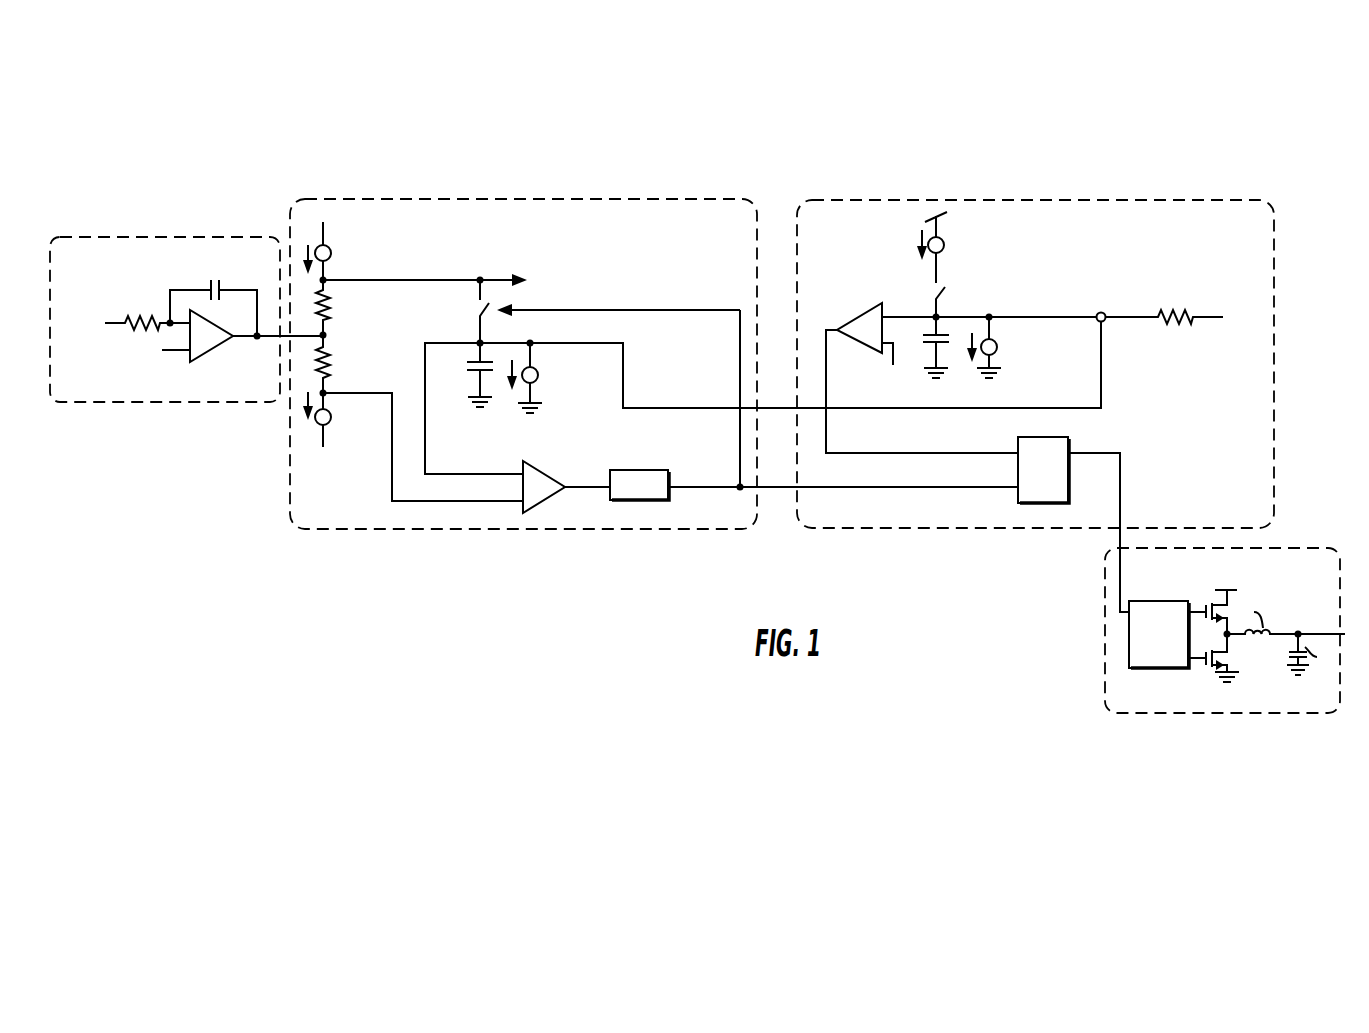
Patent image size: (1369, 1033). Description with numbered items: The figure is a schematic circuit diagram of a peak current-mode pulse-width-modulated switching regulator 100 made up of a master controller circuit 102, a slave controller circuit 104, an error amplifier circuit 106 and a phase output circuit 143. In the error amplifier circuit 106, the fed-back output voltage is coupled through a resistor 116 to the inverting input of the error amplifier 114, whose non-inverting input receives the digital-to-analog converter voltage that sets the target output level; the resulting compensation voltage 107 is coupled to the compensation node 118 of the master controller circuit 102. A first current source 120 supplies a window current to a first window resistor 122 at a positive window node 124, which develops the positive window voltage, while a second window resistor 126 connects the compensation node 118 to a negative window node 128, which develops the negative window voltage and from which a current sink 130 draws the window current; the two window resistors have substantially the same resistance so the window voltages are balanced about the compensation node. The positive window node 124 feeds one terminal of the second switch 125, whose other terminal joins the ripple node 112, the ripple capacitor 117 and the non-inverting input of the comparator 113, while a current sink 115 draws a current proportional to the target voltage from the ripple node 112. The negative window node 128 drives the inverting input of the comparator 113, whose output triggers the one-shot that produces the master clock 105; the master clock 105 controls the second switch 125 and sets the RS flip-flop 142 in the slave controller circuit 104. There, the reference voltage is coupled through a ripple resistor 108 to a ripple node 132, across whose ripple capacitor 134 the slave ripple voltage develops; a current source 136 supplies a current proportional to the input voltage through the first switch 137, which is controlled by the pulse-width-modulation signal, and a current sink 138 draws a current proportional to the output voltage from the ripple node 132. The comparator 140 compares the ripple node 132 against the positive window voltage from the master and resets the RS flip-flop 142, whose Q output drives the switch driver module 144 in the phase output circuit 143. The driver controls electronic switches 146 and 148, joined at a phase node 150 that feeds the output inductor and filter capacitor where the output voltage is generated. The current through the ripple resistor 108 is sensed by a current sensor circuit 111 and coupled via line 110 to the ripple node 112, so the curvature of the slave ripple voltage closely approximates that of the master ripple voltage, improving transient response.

The switching regulator 100 is at (749, 137).
The master controller circuit 102 is at (472, 218).
The slave controller circuit 104 is at (1078, 216).
The master clock 105 is at (713, 489).
The error amplifier circuit 106 is at (233, 259).
The compensation voltage VCOMP 107 is at (232, 370).
The ripple resistor Rr 108 is at (1188, 295).
The line 110 is at (1103, 342).
The current sensor circuit 111 is at (1103, 312).
The ripple node 112 is at (484, 344).
The comparator 113 is at (547, 480).
The error amplifier 114 is at (203, 357).
The current sink 115 is at (553, 370).
The resistor 116 is at (122, 328).
The ripple capacitor CR 117 is at (472, 373).
The compensation node 118 is at (326, 334).
The first current source 120 is at (330, 243).
The first window resistor 122 is at (327, 283).
The positive window node 124 is at (325, 279).
The switch SW2 125 is at (480, 313).
The second window resistor 126 is at (326, 395).
The negative window node 128 is at (333, 403).
The current sink 130 is at (330, 421).
The ripple node 132 is at (993, 313).
The ripple capacitor Cr 134 is at (945, 350).
The current source 136 is at (939, 238).
The switch SW1 137 is at (937, 296).
The current sink 138 is at (993, 343).
The comparator 140 is at (860, 327).
The RS flip-flop 142 is at (1021, 492).
The phase output circuit 143 is at (1105, 638).
The switch driver module 144 is at (1149, 607).
The electronic switch 146 is at (1232, 602).
The electronic switch 148 is at (1230, 658).
The phase node 150 is at (1232, 637).